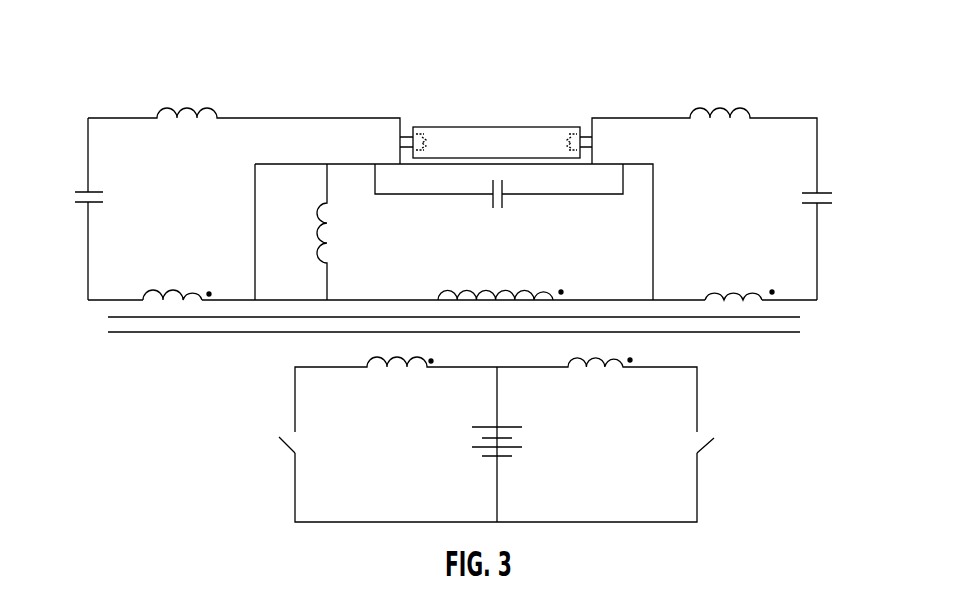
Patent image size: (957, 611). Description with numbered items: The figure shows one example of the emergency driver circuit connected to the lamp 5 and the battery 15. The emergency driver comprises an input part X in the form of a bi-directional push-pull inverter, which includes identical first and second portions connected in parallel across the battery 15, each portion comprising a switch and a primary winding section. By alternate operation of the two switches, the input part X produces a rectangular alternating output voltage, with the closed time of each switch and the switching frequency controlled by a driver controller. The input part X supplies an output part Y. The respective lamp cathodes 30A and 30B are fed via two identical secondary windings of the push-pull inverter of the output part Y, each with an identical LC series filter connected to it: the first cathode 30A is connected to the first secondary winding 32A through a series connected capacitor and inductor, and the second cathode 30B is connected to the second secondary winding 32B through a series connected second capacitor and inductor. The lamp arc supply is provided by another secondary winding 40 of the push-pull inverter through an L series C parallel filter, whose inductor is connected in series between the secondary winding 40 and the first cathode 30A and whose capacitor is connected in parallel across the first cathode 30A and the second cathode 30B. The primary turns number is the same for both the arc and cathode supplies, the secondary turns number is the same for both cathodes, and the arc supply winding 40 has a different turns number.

The lamp 5 is at (506, 127).
The first cathode 30A is at (420, 133).
The second cathode 30B is at (569, 133).
The first secondary winding 32A is at (147, 282).
The second secondary winding 32B is at (763, 285).
The secondary winding 40 is at (545, 285).
The battery 15 is at (468, 447).
The input part X is at (527, 439).
The output part Y is at (459, 188).